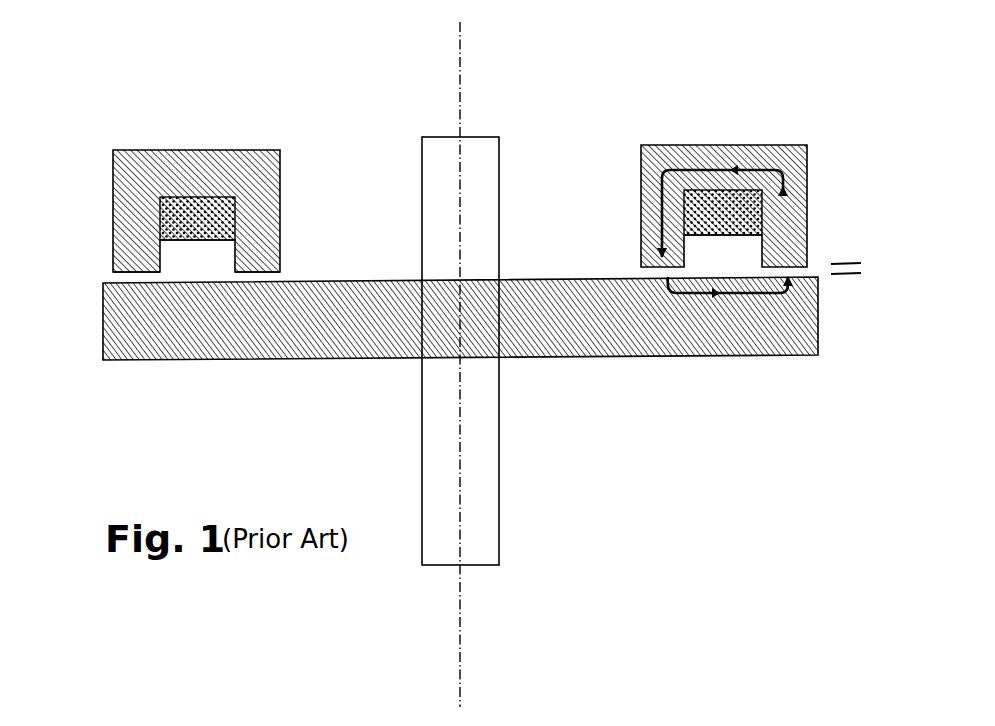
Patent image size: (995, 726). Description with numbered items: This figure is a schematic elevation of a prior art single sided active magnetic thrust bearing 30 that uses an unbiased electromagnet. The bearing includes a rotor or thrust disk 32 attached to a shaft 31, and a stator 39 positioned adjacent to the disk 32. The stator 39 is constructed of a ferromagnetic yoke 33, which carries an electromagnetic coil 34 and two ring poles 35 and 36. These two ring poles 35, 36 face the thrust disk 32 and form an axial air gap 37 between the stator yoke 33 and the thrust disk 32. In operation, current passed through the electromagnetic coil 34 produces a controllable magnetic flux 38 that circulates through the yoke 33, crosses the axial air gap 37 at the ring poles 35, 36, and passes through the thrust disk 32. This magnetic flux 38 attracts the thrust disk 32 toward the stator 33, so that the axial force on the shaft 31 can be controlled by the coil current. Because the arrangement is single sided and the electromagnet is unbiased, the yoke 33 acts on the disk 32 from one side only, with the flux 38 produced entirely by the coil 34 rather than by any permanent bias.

The single sided active magnetic thrust bearing 30 is at (193, 161).
The shaft 31 is at (485, 137).
The thrust disk 32 is at (576, 280).
The ferromagnetic yoke 33 is at (280, 172).
The electromagnetic coil 34 is at (195, 197).
The ring pole 35 is at (132, 272).
The ring pole 36 is at (260, 272).
The axial air gap 37 is at (868, 269).
The magnetic flux 38 is at (764, 231).
The stator 39 is at (753, 181).